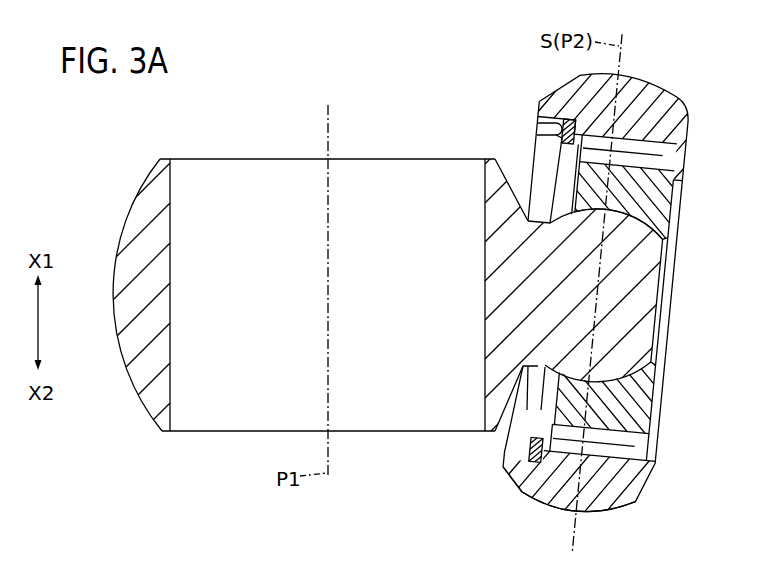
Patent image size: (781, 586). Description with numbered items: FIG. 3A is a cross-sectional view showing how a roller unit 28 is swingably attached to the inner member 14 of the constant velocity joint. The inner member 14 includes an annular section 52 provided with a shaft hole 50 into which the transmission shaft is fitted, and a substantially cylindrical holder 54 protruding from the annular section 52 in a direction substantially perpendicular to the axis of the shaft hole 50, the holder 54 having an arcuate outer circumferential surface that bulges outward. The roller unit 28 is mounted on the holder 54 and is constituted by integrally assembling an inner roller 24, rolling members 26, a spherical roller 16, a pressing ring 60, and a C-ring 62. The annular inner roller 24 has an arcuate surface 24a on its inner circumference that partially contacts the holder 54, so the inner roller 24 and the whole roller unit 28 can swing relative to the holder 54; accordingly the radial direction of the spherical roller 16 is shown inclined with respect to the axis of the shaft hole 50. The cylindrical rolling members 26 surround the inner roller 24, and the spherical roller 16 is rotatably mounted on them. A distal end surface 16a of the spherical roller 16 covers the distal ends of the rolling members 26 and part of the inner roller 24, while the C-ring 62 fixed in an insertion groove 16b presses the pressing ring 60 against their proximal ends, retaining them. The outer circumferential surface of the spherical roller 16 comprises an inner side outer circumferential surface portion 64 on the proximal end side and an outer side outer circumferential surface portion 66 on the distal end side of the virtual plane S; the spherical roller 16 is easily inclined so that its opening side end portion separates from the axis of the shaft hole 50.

The inner member 14 is at (158, 448).
The spherical roller 16 is at (655, 85).
The distal end surface 16a is at (656, 437).
The insertion groove 16b is at (542, 131).
The inner roller 24 is at (658, 183).
The arcuate surface 24a is at (663, 216).
The rolling member 26 is at (658, 149).
The roller unit 28 is at (691, 80).
The shaft hole 50 is at (176, 165).
The annular section 52 is at (152, 403).
The holder 54 is at (633, 300).
The pressing ring 60 is at (537, 168).
The C-ring 62 is at (537, 138).
The inner side outer circumferential surface portion 64 is at (515, 488).
The outer side outer circumferential surface portion 66 is at (607, 515).